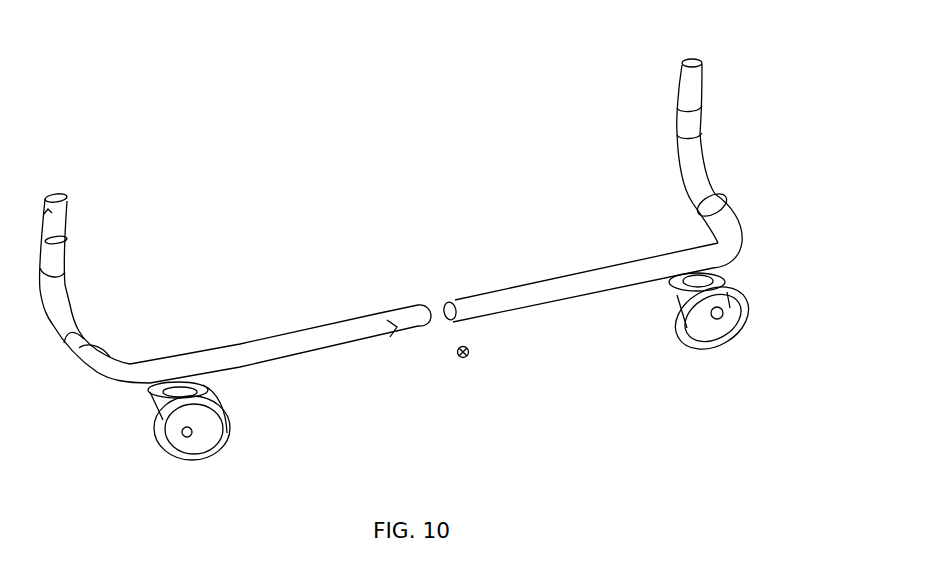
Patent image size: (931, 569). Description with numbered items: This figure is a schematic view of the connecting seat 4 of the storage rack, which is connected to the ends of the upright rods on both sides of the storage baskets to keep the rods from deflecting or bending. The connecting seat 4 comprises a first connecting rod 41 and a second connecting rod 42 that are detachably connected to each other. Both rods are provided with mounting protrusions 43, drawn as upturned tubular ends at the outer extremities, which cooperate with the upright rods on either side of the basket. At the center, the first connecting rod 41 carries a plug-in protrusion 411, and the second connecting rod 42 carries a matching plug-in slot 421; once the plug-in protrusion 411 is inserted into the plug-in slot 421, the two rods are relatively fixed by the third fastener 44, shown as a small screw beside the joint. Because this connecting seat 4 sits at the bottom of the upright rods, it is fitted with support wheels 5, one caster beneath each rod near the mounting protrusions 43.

The connecting seat 4 is at (390, 252).
The first connecting rod 41 is at (336, 371).
The plug-in protrusion 411 is at (378, 311).
The second connecting rod 42 is at (580, 297).
The plug-in slot 421 is at (456, 291).
The mounting protrusion 43 is at (65, 200).
The third fastener 44 is at (452, 338).
The support wheel 5 is at (207, 432).